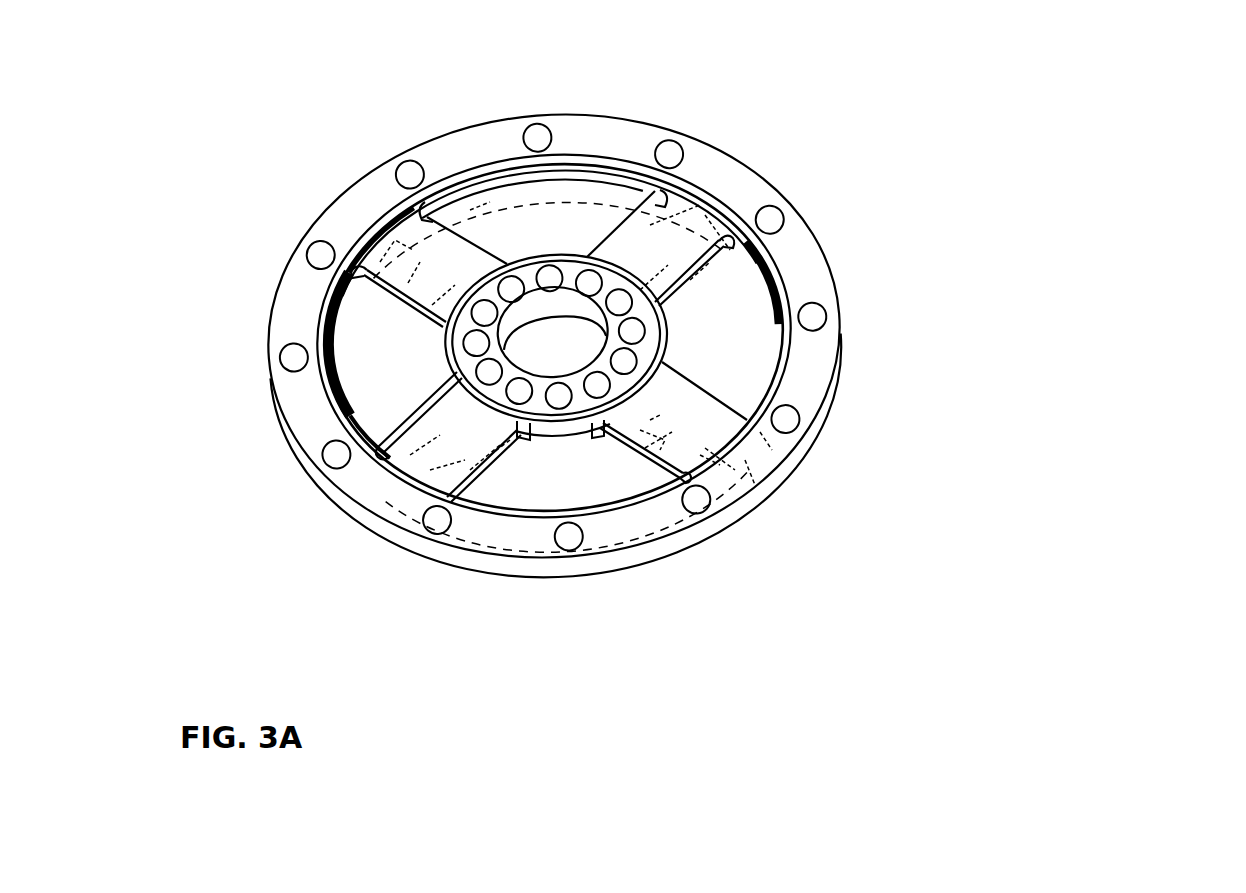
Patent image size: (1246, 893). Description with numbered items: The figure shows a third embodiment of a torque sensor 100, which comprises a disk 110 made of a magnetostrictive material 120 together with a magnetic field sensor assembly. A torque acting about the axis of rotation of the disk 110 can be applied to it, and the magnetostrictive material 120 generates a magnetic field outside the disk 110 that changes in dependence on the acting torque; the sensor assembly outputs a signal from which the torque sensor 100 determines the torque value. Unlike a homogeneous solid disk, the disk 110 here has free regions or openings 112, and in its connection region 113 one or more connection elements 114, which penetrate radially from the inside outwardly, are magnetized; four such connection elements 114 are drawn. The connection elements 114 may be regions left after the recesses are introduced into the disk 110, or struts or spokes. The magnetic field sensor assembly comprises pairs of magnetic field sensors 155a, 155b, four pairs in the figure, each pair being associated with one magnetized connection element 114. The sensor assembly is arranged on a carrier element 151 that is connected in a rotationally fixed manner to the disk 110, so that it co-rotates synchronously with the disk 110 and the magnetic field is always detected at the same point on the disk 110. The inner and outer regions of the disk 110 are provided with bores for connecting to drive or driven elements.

The torque sensor 100 is at (1050, 278).
The disk 110 is at (815, 236).
The free regions (openings) 112 is at (599, 224).
The magnetostrictive material 120 is at (690, 422).
The carrier element 151 is at (720, 358).
The connection region 113 is at (427, 433).
The connection elements 114 is at (375, 546).
The magnetic field sensor 155a is at (655, 437).
The magnetic field sensor 155b is at (700, 465).